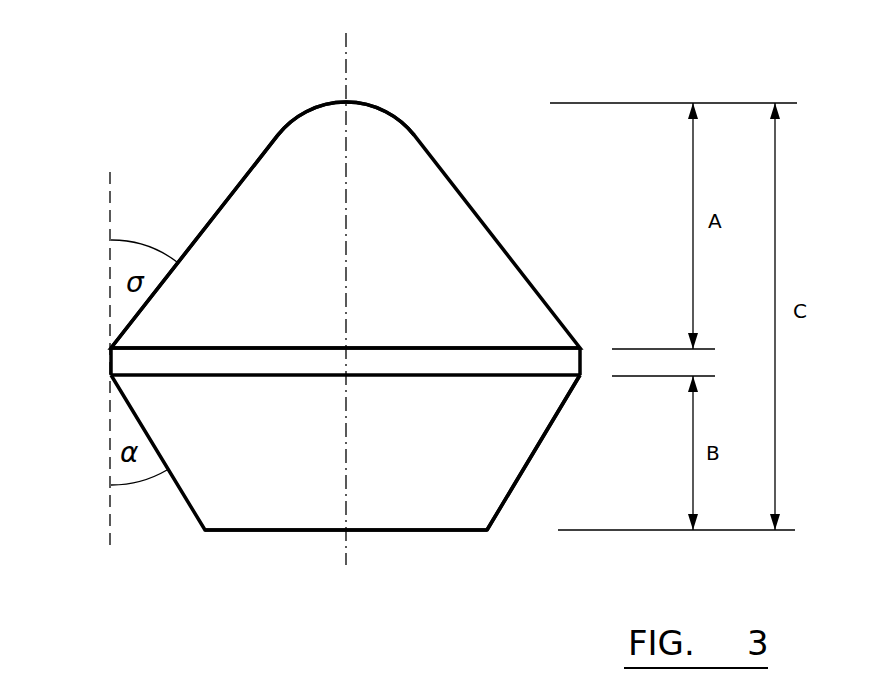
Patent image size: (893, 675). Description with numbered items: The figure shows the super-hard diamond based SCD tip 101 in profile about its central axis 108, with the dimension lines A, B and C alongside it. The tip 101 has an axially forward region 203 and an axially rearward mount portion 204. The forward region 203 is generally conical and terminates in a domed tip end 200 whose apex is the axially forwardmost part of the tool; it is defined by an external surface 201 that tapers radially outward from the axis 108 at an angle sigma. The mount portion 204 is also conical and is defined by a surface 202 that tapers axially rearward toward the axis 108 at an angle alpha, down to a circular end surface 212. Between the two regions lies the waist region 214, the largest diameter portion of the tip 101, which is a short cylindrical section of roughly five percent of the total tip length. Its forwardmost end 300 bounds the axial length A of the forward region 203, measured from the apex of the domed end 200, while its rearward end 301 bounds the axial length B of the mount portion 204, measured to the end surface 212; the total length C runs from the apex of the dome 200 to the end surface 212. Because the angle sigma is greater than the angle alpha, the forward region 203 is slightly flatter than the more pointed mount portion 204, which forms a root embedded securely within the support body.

The SCD tip 101 is at (213, 95).
The axis 108 is at (346, 78).
The domed tip end 200 is at (378, 105).
The external surface 201 is at (229, 193).
The surface 202 is at (533, 457).
The axially forward region 203 is at (445, 276).
The mount portion 204 is at (445, 467).
The circular end surface 212 is at (290, 530).
The waist region 214 is at (263, 362).
The forwardmost end of waist 300 is at (470, 347).
The rearward end of waist 301 is at (492, 376).